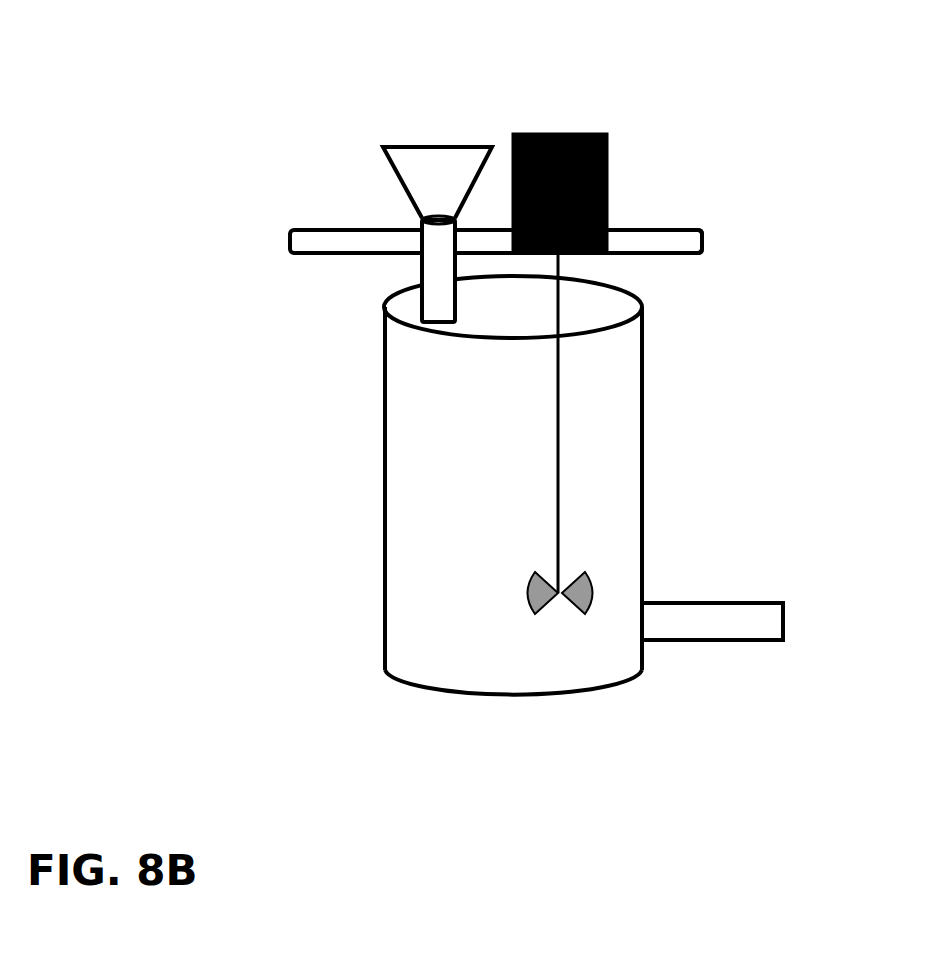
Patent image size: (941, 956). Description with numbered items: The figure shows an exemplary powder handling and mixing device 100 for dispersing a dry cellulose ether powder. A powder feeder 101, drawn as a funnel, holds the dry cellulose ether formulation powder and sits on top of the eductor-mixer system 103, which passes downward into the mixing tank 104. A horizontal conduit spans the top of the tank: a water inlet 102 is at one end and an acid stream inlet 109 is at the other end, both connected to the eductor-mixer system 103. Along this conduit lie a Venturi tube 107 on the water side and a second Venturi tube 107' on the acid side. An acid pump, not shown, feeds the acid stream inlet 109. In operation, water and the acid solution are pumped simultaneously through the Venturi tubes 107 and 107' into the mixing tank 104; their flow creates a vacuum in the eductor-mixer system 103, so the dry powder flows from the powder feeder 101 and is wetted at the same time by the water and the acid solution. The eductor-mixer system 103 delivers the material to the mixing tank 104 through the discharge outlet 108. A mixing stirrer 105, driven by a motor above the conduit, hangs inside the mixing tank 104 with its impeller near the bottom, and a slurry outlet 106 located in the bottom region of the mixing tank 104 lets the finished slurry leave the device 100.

The powder handling and mixing device 100 is at (607, 743).
The powder feeder 101 is at (398, 133).
The water inlet 102 is at (289, 238).
The eductor-mixer system 103 is at (428, 303).
The mixing tank 104 is at (384, 579).
The mixing stirrer 105 is at (560, 485).
The slurry outlet 106 is at (750, 602).
The Venturi tube 107 is at (329, 178).
The Venturi tube 107' is at (669, 185).
The discharge outlet 108 is at (385, 383).
The acid stream inlet 109 is at (704, 243).